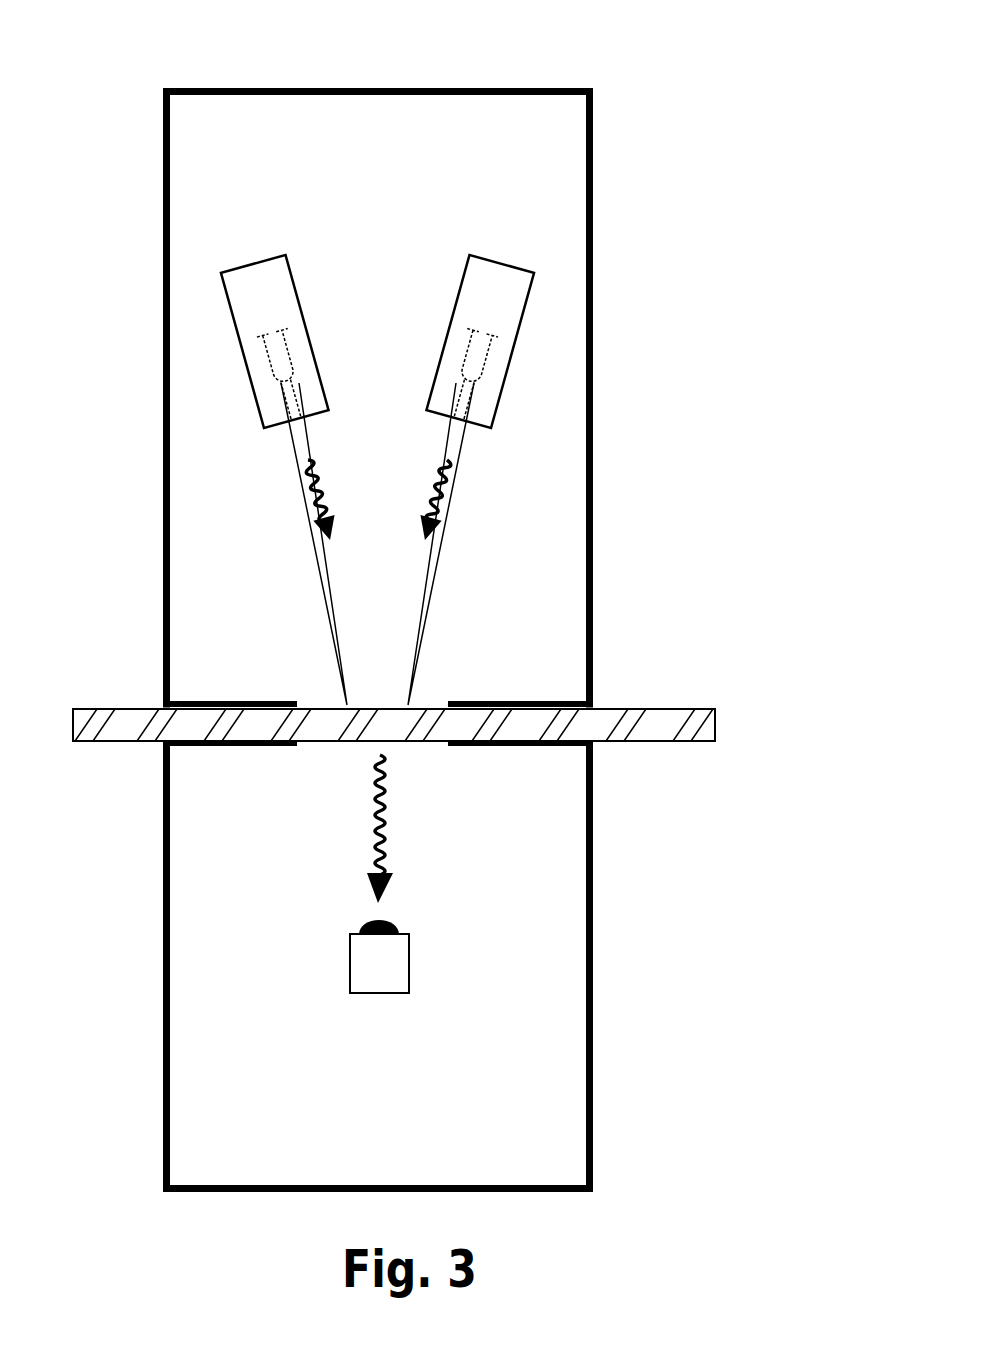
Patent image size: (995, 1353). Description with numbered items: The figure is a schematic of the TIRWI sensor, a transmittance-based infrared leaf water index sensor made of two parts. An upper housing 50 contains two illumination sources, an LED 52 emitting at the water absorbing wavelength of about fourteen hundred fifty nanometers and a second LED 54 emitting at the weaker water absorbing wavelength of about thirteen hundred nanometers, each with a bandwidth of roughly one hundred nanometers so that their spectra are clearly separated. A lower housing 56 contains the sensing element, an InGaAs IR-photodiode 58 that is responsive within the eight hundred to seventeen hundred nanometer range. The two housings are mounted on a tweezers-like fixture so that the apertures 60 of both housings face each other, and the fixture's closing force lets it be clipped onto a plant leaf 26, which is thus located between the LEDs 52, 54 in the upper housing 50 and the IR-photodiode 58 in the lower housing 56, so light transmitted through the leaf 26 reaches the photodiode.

The plant leaf 26 is at (713, 723).
The upper housing 50 is at (592, 118).
The LED 52 is at (490, 360).
The LED 54 is at (268, 363).
The lower housing 56 is at (593, 932).
The IR-photodiode 58 is at (377, 963).
The apertures 60 is at (318, 748).